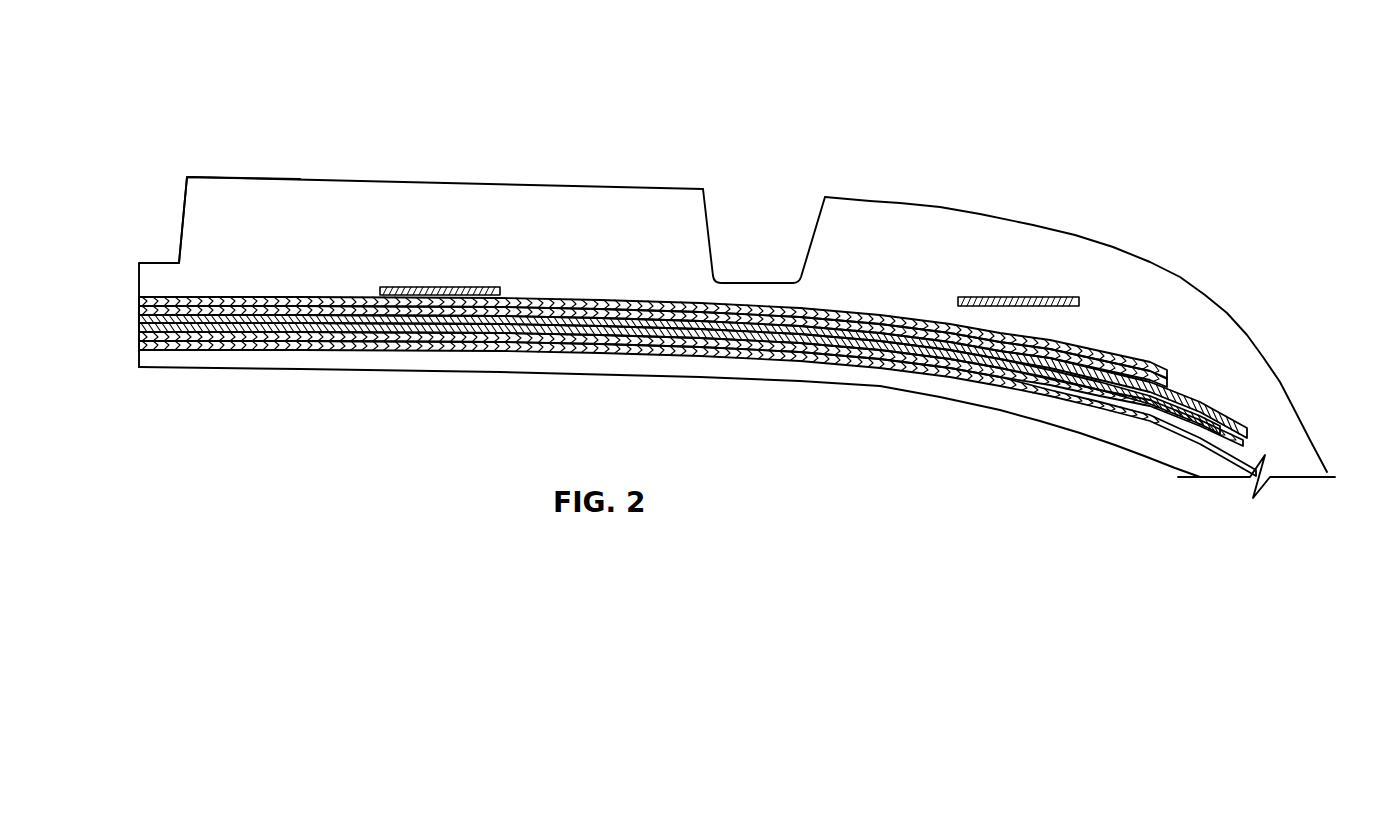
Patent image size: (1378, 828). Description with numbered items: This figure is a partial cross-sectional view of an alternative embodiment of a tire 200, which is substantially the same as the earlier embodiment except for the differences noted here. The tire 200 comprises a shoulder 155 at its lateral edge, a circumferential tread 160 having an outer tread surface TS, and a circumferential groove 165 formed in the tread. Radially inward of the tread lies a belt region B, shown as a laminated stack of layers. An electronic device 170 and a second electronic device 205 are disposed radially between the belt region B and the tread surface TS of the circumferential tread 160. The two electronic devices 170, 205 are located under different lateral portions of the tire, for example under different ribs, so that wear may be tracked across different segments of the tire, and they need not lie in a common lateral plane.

The tire 200 is at (264, 62).
The circumferential tread 160 is at (425, 200).
The circumferential groove 165 is at (758, 240).
The electronic device 170 is at (397, 287).
The second electronic device 205 is at (974, 297).
The shoulder 155 is at (1216, 303).
The tread surface TS is at (205, 170).
The belt region B is at (136, 297).